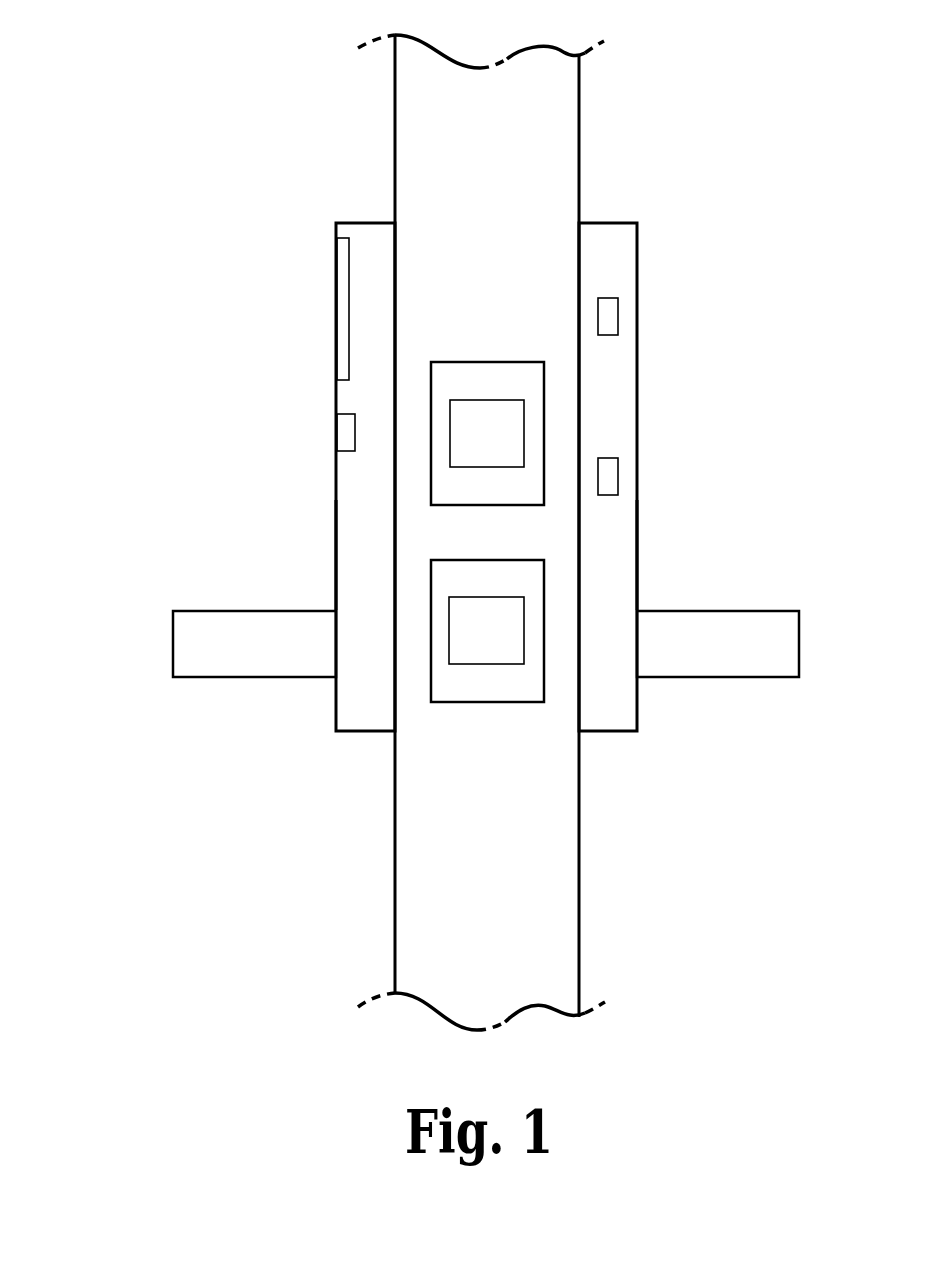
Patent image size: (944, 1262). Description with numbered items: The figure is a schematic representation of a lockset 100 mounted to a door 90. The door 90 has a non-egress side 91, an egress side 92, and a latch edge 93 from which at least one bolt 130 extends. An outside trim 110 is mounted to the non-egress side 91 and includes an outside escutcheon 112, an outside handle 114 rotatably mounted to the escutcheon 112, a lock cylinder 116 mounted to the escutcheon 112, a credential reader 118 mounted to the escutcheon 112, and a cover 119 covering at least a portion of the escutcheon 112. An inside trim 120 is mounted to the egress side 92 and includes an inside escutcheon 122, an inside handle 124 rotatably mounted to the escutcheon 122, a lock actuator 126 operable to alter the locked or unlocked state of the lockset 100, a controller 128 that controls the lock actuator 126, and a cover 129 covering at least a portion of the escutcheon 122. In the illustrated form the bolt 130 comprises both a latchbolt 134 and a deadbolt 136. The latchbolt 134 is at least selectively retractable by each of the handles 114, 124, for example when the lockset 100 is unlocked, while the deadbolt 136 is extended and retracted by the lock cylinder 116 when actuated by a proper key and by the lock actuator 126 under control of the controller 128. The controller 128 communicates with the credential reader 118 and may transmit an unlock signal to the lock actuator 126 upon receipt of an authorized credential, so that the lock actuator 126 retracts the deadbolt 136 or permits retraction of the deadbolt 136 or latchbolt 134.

The door 90 is at (316, 102).
The non-egress side 91 is at (395, 158).
The egress side 92 is at (579, 85).
The latch edge 93 is at (517, 145).
The lockset 100 is at (158, 193).
The outside trim 110 is at (193, 338).
The outside escutcheon 112 is at (334, 206).
The outside handle 114 is at (205, 575).
The lock cylinder 116 is at (322, 434).
The credential reader 118 is at (326, 313).
The cover 119 is at (336, 555).
The inside trim 120 is at (743, 355).
The inside escutcheon 122 is at (627, 205).
The inside handle 124 is at (772, 575).
The lock actuator 126 is at (618, 478).
The controller 128 is at (618, 316).
The cover 129 is at (637, 555).
The bolt 130 is at (496, 303).
The latchbolt 134 is at (470, 664).
The deadbolt 136 is at (474, 400).